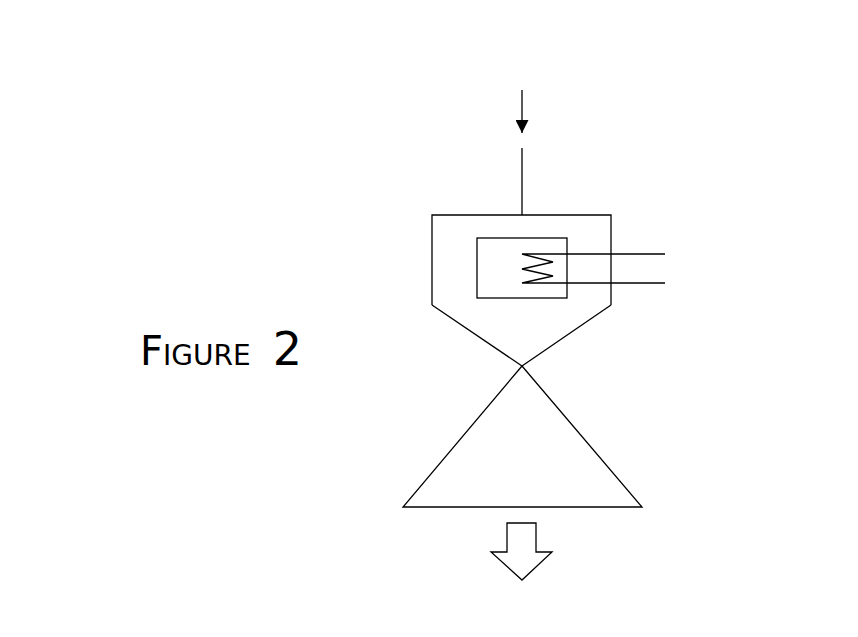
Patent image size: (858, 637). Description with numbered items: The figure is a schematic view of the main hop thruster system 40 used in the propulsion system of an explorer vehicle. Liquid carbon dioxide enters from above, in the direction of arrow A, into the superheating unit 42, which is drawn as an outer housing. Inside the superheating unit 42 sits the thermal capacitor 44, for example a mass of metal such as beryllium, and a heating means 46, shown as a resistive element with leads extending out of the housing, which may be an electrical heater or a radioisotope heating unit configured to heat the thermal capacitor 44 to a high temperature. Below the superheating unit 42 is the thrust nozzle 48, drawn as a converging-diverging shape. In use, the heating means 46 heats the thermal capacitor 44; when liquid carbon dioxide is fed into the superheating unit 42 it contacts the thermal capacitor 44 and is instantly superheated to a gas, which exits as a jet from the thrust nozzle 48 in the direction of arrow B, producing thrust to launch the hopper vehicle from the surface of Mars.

The main hop thruster system 40 is at (742, 92).
The superheating unit 42 is at (597, 212).
The thermal capacitor 44 is at (488, 289).
The heating means 46 is at (543, 287).
The thrust nozzle 48 is at (605, 462).